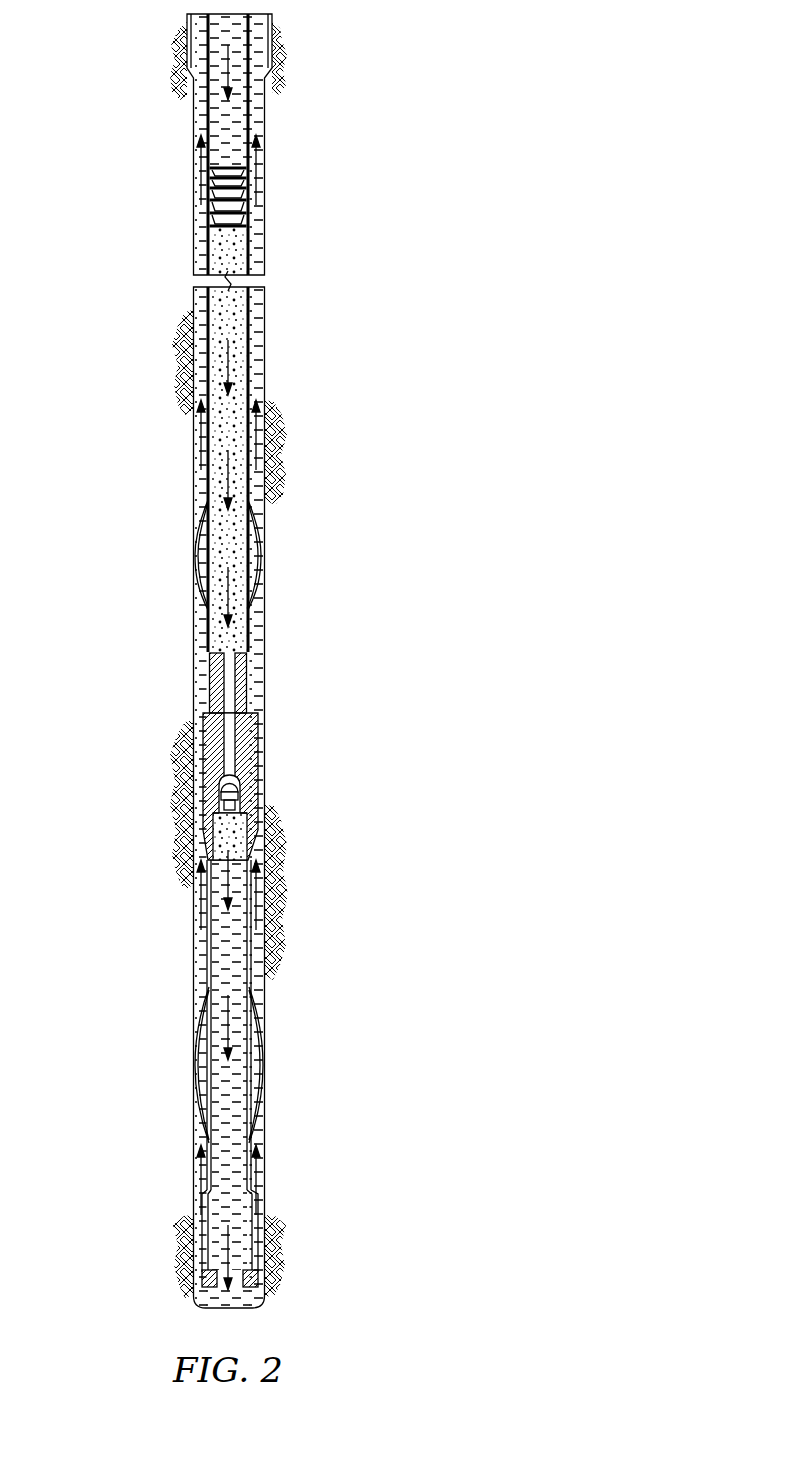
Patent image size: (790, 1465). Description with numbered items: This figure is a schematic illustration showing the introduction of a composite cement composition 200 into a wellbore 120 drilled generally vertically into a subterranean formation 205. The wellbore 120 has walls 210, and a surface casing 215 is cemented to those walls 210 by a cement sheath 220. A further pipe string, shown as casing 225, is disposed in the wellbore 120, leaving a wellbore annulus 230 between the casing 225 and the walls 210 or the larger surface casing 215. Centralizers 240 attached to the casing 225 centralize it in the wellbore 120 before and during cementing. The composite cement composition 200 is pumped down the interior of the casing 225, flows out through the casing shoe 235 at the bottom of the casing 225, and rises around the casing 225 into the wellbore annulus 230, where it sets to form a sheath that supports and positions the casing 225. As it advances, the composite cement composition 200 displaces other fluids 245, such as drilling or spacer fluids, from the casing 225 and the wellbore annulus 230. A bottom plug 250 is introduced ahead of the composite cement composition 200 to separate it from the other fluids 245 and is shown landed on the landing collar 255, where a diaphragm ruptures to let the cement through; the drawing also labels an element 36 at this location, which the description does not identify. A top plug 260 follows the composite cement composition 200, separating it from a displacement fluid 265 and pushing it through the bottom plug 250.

The surface casing 215 is at (262, 29).
The cement sheath 220 is at (283, 47).
The displacement fluid 265 is at (233, 128).
The top plug 260 is at (206, 212).
The walls 210 is at (262, 228).
The composite cement composition 200 is at (238, 322).
The other fluids 245 is at (203, 352).
The wellbore annulus 230 is at (203, 474).
The casing 225 is at (255, 385).
The wellbore 120 is at (282, 493).
The centralizers 240 is at (197, 553).
The bottom plug 250 is at (203, 668).
The landing collar 255 is at (204, 745).
The subterranean formation 205 is at (367, 798).
The valve 36 is at (232, 856).
The casing shoe 235 is at (183, 1233).